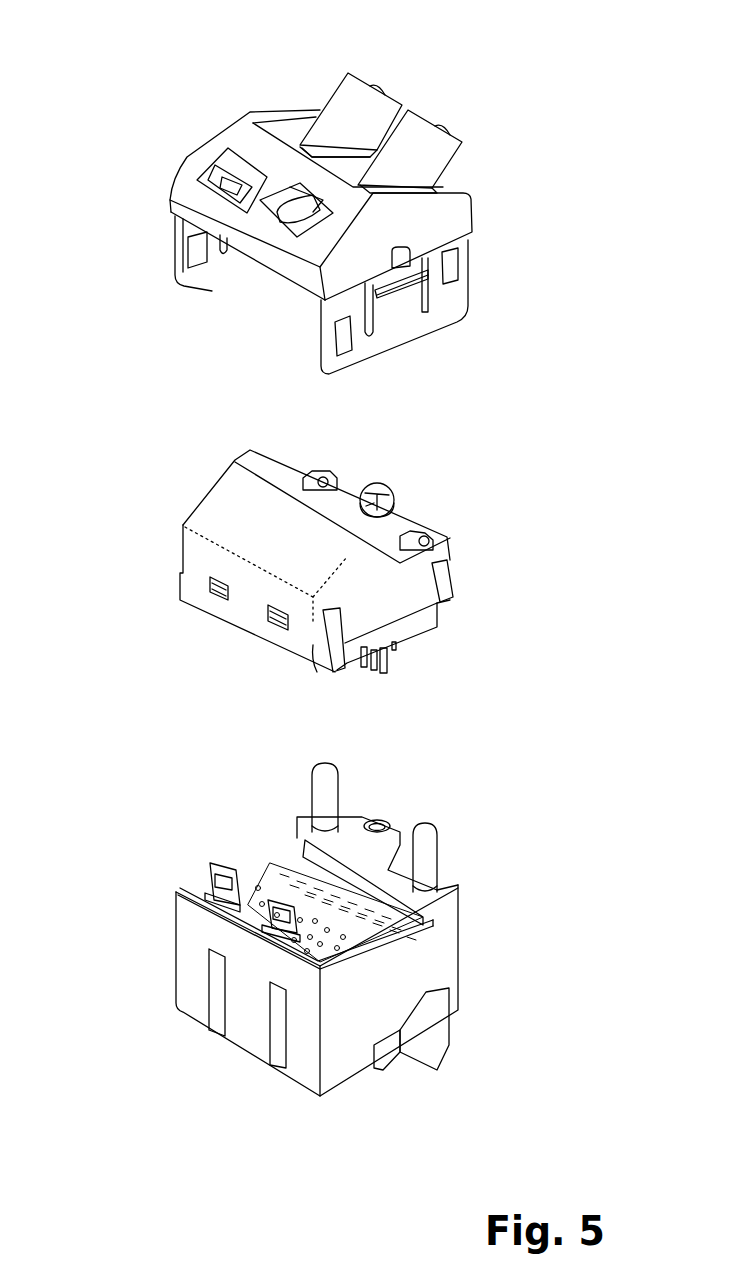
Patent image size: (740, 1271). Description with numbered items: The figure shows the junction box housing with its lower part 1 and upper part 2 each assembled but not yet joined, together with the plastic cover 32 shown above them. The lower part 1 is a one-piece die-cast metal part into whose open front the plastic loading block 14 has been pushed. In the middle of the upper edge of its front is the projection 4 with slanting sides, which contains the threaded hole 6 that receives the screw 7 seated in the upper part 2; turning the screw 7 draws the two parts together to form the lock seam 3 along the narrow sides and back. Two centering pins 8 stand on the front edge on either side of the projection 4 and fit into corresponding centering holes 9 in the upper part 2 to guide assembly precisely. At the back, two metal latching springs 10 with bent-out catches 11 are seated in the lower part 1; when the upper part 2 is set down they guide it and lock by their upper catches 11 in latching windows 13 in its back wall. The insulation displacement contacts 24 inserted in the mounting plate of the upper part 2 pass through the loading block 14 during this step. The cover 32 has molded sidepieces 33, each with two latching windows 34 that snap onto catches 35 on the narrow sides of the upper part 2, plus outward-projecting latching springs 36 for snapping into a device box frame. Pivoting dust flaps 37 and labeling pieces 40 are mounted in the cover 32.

The lower part 1 is at (200, 1000).
The upper part 2 is at (233, 502).
The lock seam 3 is at (250, 923).
The projection 4 is at (373, 814).
The threaded hole 6 is at (381, 828).
The screw 7 is at (378, 500).
The centering pins 8 is at (326, 783).
The centering holes 9 is at (327, 480).
The latching springs 10 is at (222, 898).
The catches 11 is at (283, 913).
The latching windows 13 is at (280, 625).
The loading block 14 is at (380, 920).
The insulation displacement contacts 24 is at (385, 653).
The cover 32 is at (428, 220).
The sidepieces 33 is at (195, 277).
The latching windows 34 is at (450, 263).
The catches 35 is at (447, 586).
The latching springs 36 is at (403, 286).
The dust flaps 37 is at (360, 108).
The labeling pieces 40 is at (278, 202).